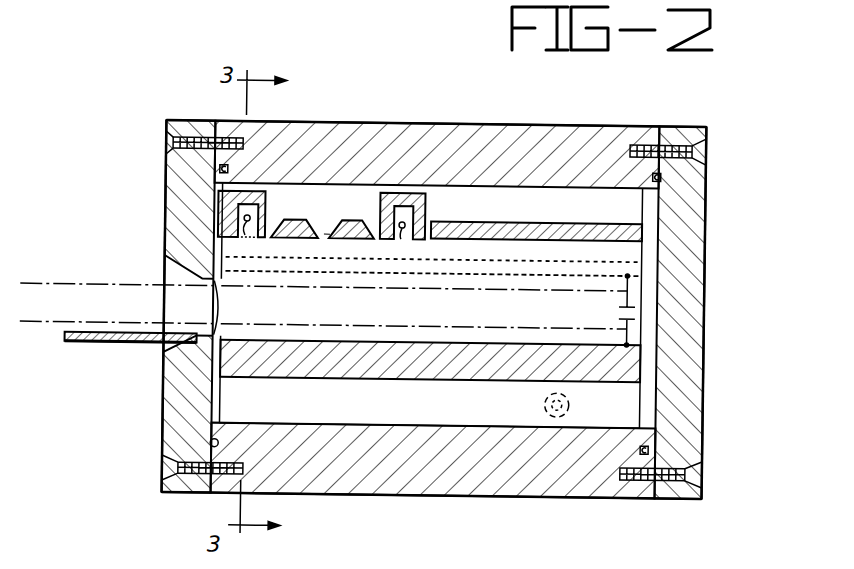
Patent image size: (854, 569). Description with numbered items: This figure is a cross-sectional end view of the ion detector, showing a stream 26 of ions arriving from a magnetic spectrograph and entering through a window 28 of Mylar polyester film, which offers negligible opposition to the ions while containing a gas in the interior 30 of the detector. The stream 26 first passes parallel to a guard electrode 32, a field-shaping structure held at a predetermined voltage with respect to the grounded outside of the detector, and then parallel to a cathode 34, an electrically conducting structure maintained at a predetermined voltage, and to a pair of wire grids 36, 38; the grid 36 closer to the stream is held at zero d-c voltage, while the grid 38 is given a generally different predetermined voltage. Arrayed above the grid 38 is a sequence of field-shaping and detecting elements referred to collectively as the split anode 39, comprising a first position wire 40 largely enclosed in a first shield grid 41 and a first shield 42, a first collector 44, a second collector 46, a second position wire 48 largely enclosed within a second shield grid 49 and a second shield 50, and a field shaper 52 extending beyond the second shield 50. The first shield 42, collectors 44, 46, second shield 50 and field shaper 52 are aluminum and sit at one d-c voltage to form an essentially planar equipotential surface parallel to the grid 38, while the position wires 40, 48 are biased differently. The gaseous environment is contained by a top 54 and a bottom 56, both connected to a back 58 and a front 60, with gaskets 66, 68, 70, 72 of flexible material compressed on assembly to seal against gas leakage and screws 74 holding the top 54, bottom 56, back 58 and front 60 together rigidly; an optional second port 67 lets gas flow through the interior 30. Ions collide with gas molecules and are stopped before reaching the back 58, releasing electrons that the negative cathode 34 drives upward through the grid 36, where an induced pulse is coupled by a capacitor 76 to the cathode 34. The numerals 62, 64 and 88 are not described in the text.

The stream of ions 26 is at (45, 316).
The window 28 is at (185, 303).
The interior 30 is at (425, 321).
The guard electrode 32 is at (79, 346).
The cathode 34 is at (271, 371).
The wire grid 36 is at (587, 267).
The wire grid 38 is at (529, 252).
The split anode 39 is at (333, 198).
The first position wire 40 is at (214, 218).
The first shield grid 41 is at (247, 237).
The first shield 42 is at (214, 191).
The first collector 44 is at (297, 220).
The second collector 46 is at (345, 220).
The second position wire 48 is at (403, 226).
The second shield grid 49 is at (399, 227).
The second shield 50 is at (407, 192).
The field shaper 52 is at (483, 224).
The top 54 is at (529, 131).
The bottom 56 is at (398, 475).
The back 58 is at (704, 338).
The front 60 is at (189, 401).
The lower corner of end wall 62 is at (180, 494).
The rear end wall 64 is at (684, 378).
The gasket 66 is at (216, 168).
The second port 67 is at (547, 401).
The gasket 68 is at (659, 171).
The gasket 70 is at (651, 444).
The gasket 72 is at (221, 441).
The screws 74 is at (190, 137).
The capacitor 76 is at (617, 306).
The lower gas space 88 is at (398, 411).